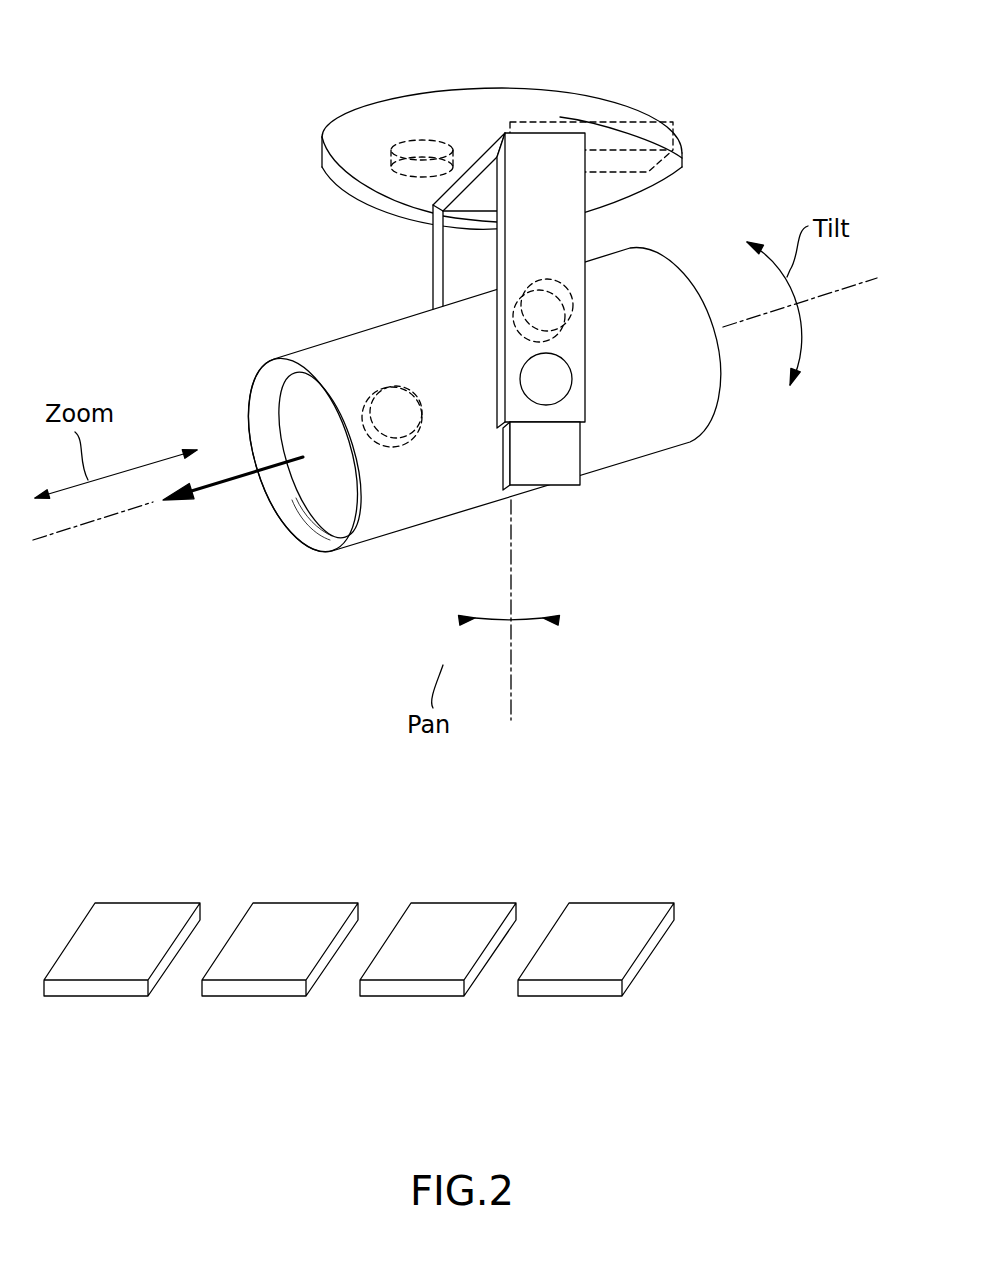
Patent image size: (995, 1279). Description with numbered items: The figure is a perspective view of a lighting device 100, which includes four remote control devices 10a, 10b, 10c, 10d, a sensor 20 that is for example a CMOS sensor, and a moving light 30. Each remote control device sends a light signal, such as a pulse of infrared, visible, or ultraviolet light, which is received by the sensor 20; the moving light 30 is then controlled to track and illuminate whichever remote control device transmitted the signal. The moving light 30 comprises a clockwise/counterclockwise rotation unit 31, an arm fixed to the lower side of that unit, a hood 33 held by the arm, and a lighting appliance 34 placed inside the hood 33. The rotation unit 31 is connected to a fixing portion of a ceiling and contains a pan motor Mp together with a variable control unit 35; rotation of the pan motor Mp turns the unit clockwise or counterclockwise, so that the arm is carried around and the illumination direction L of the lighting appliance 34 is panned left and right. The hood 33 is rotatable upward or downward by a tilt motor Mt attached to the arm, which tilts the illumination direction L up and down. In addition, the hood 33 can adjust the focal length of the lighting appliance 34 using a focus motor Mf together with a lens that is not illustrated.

The lighting device 100 is at (105, 110).
The moving light 30 is at (265, 223).
The clockwise/counterclockwise rotation unit 31 is at (683, 182).
The hood 33 is at (687, 447).
The lighting appliance 34 is at (330, 492).
The variable control unit 35 is at (675, 128).
The sensor 20 is at (587, 450).
The pan motor Mp is at (420, 168).
The tilt motor Mt is at (547, 300).
The focus motor Mf is at (393, 410).
The illumination direction L is at (233, 478).
The remote control device 10a is at (98, 997).
The remote control device 10b is at (256, 997).
The remote control device 10c is at (414, 997).
The remote control device 10d is at (572, 997).